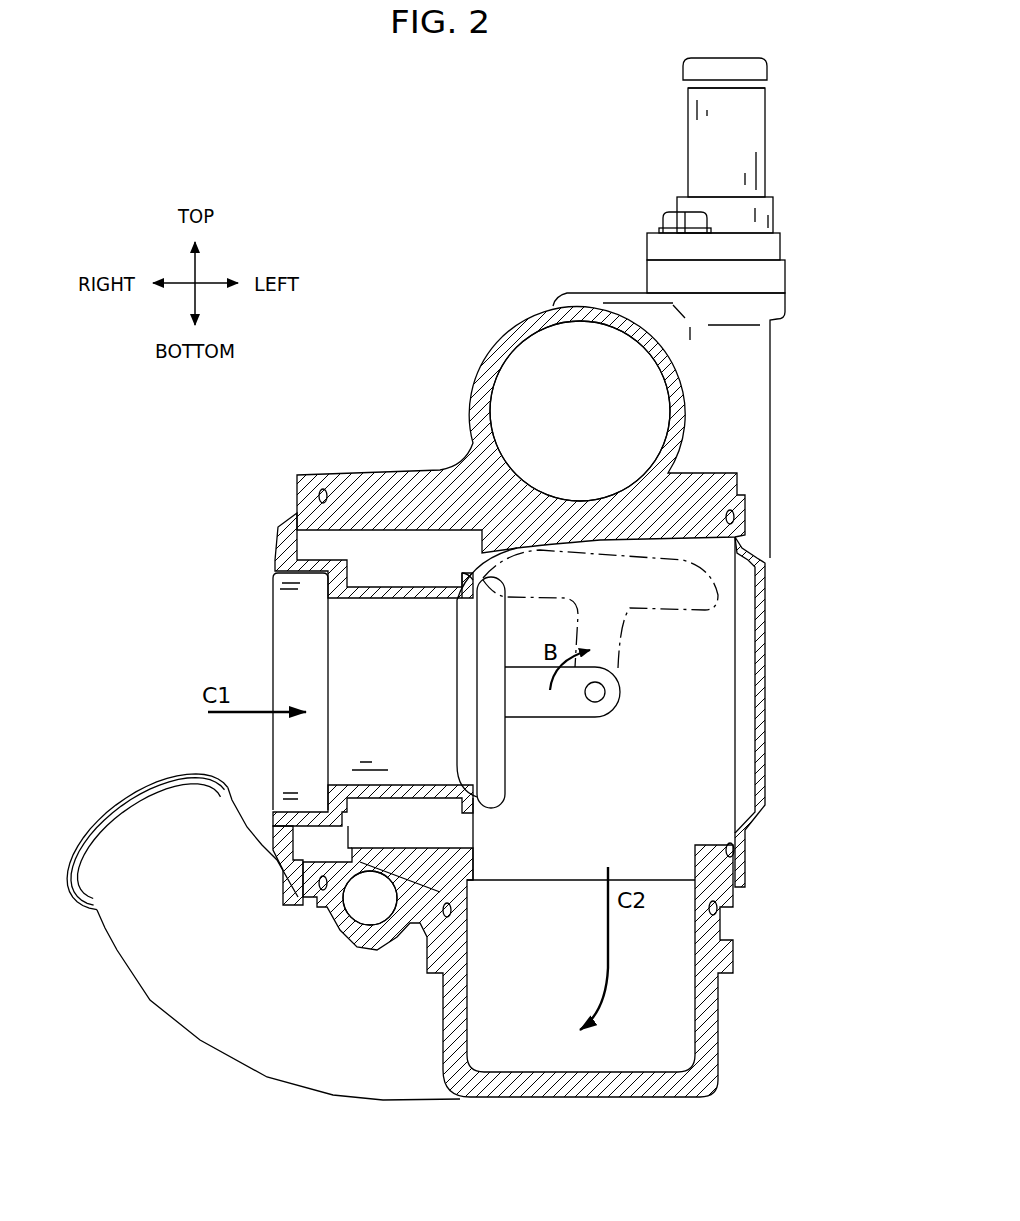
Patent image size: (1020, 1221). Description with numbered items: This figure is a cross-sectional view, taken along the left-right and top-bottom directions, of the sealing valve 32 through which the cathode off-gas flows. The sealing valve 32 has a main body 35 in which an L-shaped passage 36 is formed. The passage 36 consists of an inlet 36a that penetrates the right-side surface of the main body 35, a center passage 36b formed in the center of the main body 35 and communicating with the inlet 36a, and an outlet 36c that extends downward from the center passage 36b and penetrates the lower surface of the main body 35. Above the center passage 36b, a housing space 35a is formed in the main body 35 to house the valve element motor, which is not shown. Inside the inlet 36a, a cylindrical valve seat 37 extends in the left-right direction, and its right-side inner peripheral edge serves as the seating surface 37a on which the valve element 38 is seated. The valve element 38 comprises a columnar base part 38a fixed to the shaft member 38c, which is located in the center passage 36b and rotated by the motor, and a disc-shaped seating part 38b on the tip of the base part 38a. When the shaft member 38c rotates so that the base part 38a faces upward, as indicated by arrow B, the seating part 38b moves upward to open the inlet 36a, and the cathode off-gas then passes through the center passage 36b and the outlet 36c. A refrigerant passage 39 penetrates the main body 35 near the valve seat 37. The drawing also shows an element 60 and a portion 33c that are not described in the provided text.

The sealing valve 32 is at (369, 288).
The sensor 60 is at (738, 62).
The main body 35 is at (432, 494).
The housing space 35a is at (600, 414).
The valve seat 37 is at (260, 558).
The seating surface 37a is at (466, 603).
The passage 36 is at (396, 660).
The inlet 36a is at (407, 697).
The center passage 36b is at (695, 716).
The outlet 36c is at (593, 856).
The valve element 38 is at (444, 717).
The base part 38a is at (537, 708).
The seating part 38b is at (500, 790).
The shaft member 38c is at (601, 701).
The refrigerant passage 39 is at (355, 922).
The lower chamber of housing 33c is at (712, 1067).